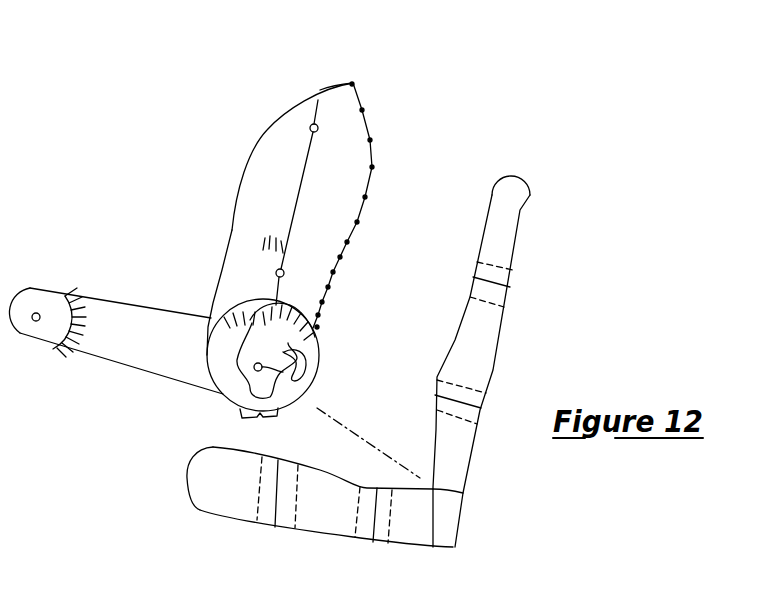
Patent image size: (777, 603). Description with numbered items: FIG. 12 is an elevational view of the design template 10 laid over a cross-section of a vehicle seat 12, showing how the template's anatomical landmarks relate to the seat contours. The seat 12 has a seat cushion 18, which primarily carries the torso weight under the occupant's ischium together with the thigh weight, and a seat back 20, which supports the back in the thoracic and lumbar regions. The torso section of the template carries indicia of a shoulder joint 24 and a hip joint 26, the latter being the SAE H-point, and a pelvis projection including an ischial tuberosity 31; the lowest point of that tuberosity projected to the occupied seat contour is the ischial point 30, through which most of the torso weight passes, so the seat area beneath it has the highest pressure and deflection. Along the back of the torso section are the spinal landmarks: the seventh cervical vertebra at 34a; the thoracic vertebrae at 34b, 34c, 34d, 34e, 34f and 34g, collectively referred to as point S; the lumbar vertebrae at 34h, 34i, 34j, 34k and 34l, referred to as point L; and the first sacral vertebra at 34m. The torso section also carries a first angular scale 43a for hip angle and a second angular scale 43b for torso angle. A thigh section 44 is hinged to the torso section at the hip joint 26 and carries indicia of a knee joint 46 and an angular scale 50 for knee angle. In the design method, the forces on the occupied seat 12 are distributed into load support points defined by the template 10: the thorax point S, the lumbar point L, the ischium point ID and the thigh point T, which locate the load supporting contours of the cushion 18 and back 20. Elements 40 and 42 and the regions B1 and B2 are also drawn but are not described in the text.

The design template 10 is at (166, 156).
The seat 12 is at (531, 357).
The seat cushion 18 is at (328, 517).
The seat back 20 is at (507, 242).
The shoulder joint 24 is at (318, 100).
The hip joint 26 is at (300, 399).
The point I_D^0 30 is at (259, 426).
The ischial tuberosity 31 is at (220, 399).
The spinal landmark C7 34a is at (352, 84).
The spinal landmark T2 34b is at (362, 110).
The spinal landmark T4 34c is at (370, 140).
The spinal landmark T6 34d is at (373, 172).
The spinal landmark T8 34e is at (365, 197).
The spinal landmark T10 34f is at (357, 222).
The spinal landmark T12 34g is at (347, 242).
The spinal landmark L1 34h is at (340, 257).
The spinal landmark L2 34i is at (333, 272).
The spinal landmark L3 34j is at (328, 287).
The spinal landmark L4 34k is at (322, 302).
The spinal landmark L5 34l is at (318, 315).
The spinal landmark S1 34m is at (317, 327).
The strap 40 is at (335, 90).
The upper arm 42 is at (300, 117).
The first angular scale 43a is at (213, 310).
The second angular scale 43b is at (253, 245).
The thigh section 44 is at (120, 317).
The knee joint 46 is at (36, 313).
The angular scale 50 is at (67, 293).
The point S is at (372, 167).
The point L is at (327, 294).
The thigh load support point T is at (117, 369).
The ischium load support point ID is at (279, 409).
The base segment 1 B1 is at (441, 561).
The base segment 2 B2 is at (469, 496).